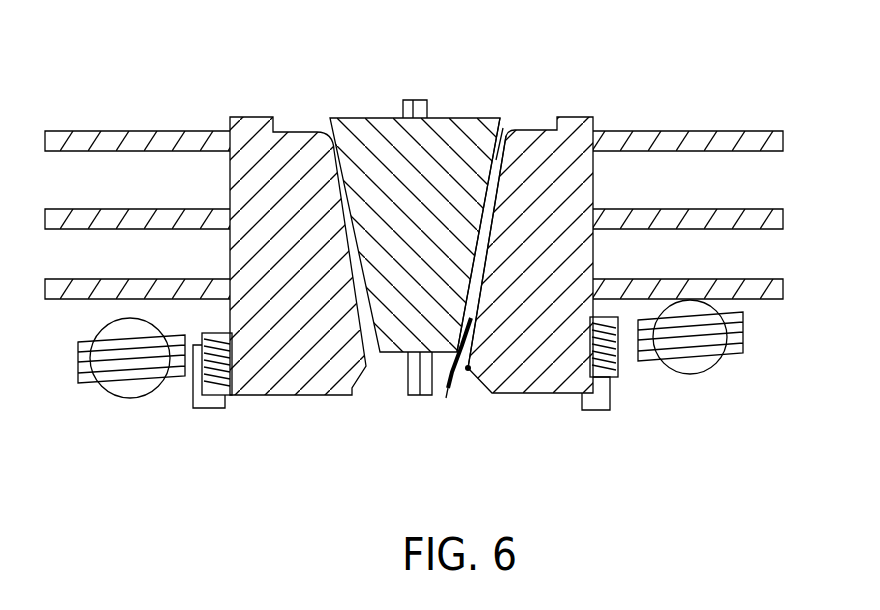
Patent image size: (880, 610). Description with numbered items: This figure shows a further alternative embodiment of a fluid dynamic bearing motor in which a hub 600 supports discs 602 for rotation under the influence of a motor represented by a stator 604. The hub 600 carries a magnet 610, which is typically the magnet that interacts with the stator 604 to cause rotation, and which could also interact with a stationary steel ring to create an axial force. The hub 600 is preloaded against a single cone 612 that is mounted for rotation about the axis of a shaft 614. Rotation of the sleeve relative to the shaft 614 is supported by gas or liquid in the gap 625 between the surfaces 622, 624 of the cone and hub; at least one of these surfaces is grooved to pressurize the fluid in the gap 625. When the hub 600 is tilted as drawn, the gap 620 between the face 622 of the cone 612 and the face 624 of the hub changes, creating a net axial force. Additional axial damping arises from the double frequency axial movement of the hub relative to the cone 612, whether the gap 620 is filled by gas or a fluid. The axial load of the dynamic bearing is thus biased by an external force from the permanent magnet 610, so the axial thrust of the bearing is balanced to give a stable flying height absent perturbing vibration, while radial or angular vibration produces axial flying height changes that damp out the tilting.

The hub 600 is at (523, 377).
The discs 602 is at (768, 131).
The stator 604 is at (743, 327).
The magnet 610 is at (618, 360).
The cone 612 is at (355, 126).
The shaft 614 is at (411, 101).
The gap 620 is at (446, 398).
The surface of the cone 622 is at (468, 192).
The surface of the hub 624 is at (498, 182).
The gap 625 is at (504, 134).